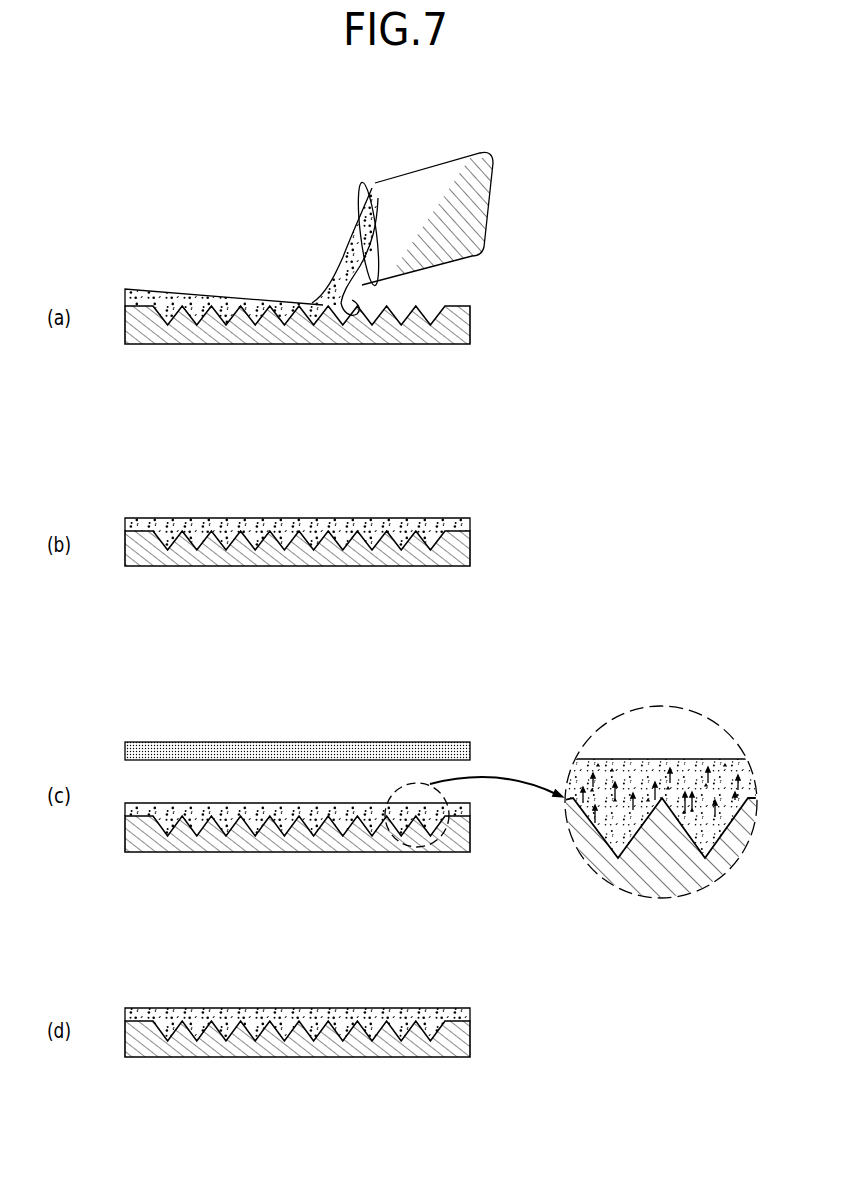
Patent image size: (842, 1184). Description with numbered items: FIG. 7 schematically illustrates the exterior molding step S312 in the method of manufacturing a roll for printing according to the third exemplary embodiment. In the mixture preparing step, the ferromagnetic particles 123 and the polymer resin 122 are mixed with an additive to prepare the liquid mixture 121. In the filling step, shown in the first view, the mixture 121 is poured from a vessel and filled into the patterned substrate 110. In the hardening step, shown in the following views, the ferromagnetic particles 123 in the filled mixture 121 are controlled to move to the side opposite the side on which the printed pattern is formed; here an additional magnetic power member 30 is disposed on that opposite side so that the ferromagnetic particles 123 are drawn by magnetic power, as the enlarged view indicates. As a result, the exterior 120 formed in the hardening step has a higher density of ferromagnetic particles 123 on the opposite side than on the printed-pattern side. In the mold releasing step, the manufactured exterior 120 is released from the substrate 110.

The substrate 110 is at (470, 325).
The mixture 121 is at (283, 306).
The polymer resin 122 is at (650, 765).
The ferromagnetic particles 123 is at (612, 772).
The magnetic power member 30 is at (470, 750).
The exterior 120 is at (470, 1012).
The exterior molding step S312 is at (603, 124).